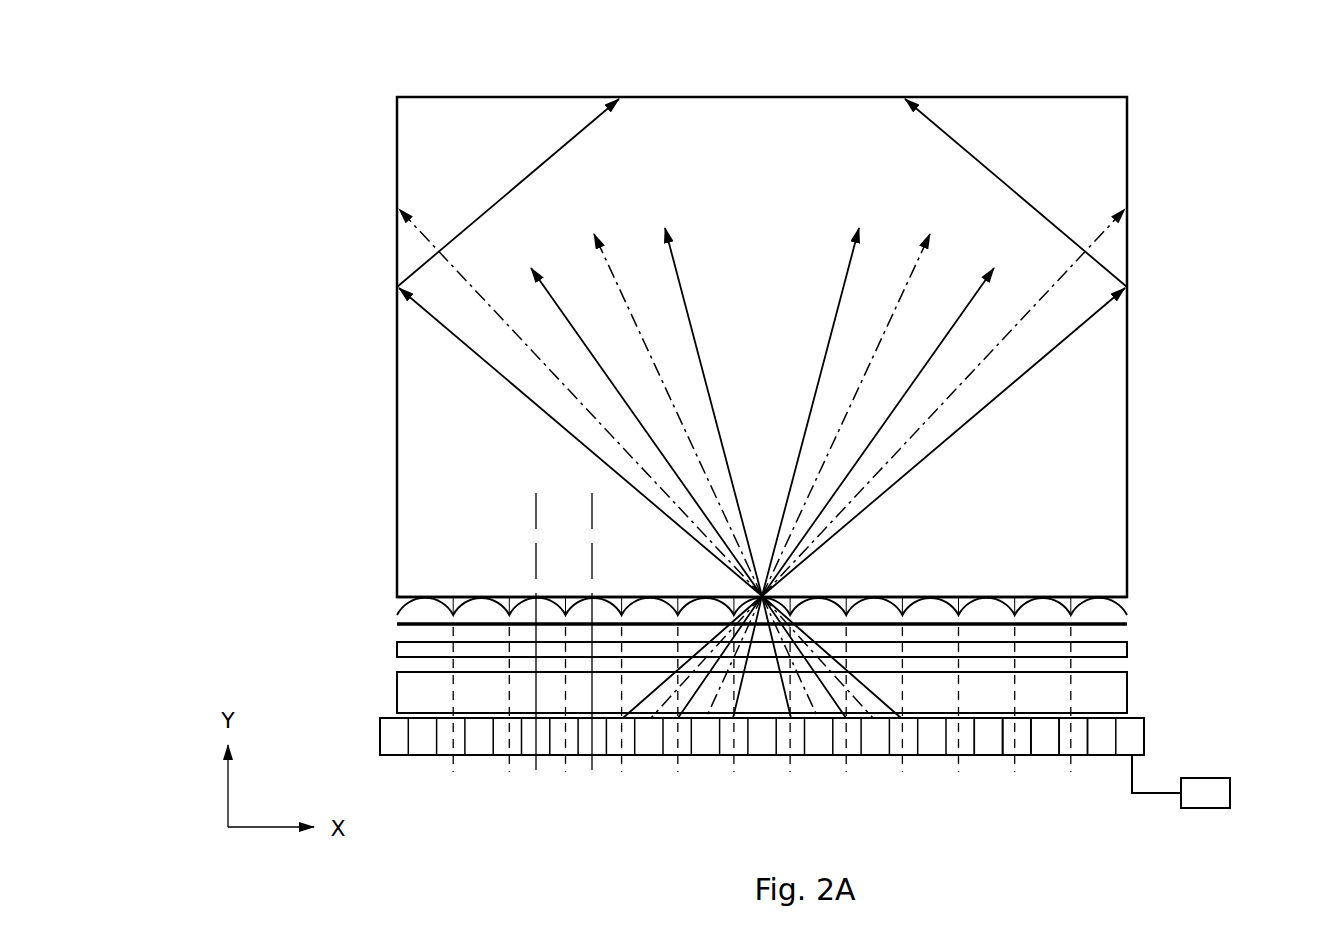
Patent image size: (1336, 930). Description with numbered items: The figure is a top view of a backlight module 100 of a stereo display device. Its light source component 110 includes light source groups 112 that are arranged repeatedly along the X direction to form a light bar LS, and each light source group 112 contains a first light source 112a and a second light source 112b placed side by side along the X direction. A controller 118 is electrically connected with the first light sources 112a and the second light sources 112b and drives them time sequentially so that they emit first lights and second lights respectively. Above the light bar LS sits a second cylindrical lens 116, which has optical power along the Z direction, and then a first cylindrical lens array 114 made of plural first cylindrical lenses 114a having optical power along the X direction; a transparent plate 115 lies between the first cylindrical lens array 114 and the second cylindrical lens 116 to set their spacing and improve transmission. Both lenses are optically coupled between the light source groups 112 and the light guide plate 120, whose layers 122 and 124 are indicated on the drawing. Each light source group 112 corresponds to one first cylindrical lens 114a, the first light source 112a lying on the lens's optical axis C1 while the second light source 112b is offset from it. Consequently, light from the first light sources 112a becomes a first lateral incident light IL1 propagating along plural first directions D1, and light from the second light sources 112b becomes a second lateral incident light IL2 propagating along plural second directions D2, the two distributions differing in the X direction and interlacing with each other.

The backlight module 100 is at (178, 84).
The light source component 110 is at (382, 629).
The light source groups 112 is at (984, 799).
The first light source 112a is at (982, 755).
The second light source 112b is at (1006, 755).
The first cylindrical lens array 114 is at (841, 622).
The first cylindrical lenses 114a is at (1103, 616).
The transparent plate 115 is at (397, 648).
The second cylindrical lens 116 is at (1110, 691).
The controller 118 is at (1230, 790).
The light guide plate 120 is at (841, 348).
The lower substrate 122 is at (1108, 600).
The display panel 124 is at (1094, 532).
The light bar LS is at (832, 798).
The first lateral incident light IL1 is at (603, 253).
The second lateral incident light IL2 is at (677, 267).
The first directions D1 is at (590, 210).
The second directions D2 is at (662, 200).
The optical axis C1 is at (535, 503).